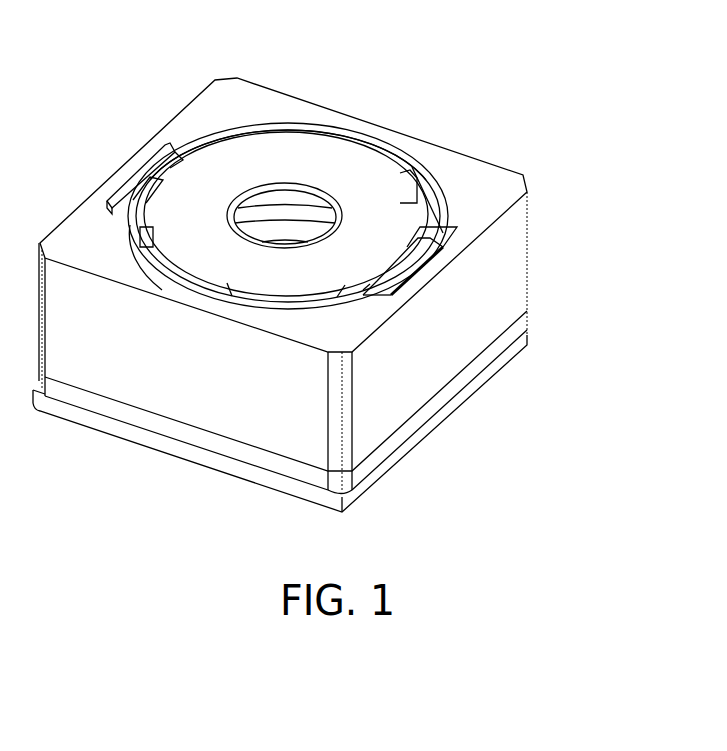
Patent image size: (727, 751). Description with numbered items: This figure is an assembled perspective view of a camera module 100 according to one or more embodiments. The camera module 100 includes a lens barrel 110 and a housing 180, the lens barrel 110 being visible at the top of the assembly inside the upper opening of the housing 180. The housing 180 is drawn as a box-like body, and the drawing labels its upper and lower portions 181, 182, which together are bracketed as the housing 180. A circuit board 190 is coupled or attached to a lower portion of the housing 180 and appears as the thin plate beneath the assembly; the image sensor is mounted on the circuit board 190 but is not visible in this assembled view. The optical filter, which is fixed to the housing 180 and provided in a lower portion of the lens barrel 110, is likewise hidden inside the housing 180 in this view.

The camera module 100 is at (160, 37).
The lens barrel 110 is at (354, 170).
The housing 180 is at (607, 227).
The upper housing / case 181 is at (522, 266).
The lower housing / base frame 182 is at (522, 323).
The circuit board 190 is at (510, 357).